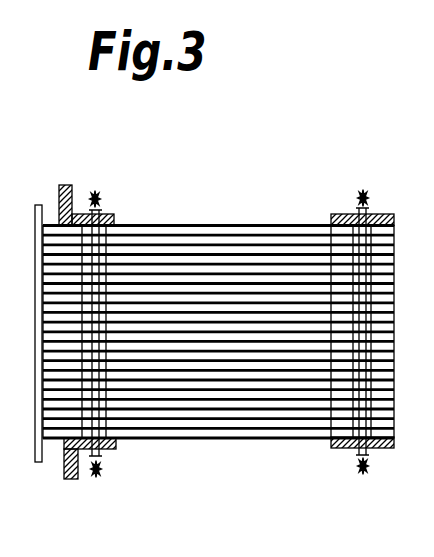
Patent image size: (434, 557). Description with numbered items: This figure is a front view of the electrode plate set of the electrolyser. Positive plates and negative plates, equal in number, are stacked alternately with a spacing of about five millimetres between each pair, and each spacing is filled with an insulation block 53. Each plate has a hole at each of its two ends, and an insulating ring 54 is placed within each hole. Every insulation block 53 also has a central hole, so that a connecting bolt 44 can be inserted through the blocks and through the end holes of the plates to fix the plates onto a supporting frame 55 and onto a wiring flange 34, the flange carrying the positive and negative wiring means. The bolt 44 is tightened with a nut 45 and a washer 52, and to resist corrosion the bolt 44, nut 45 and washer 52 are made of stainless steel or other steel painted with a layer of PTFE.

The flange 34 is at (59, 177).
The insulation block 53 is at (99, 224).
The insulating ring 54 is at (97, 248).
The supporting frame 55 is at (377, 205).
The bolt 44 is at (82, 452).
The nut 45 is at (71, 464).
The washer 52 is at (96, 469).